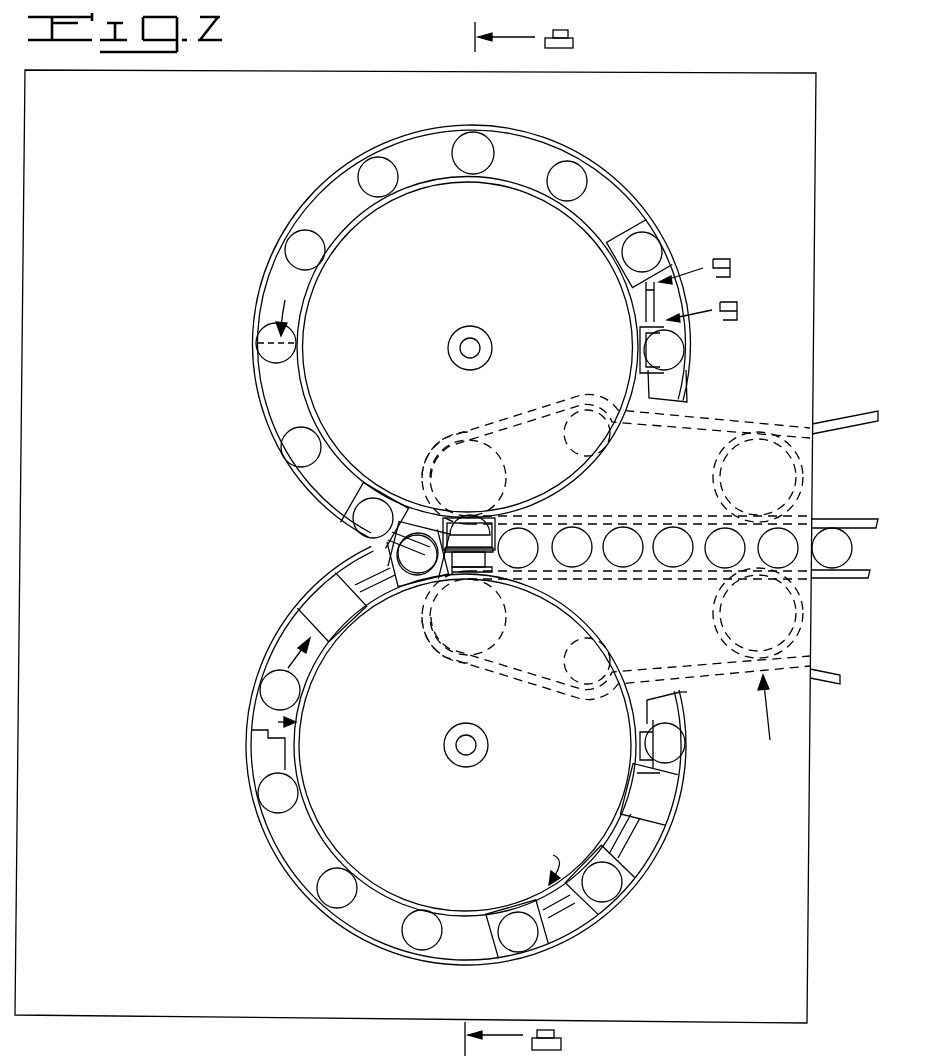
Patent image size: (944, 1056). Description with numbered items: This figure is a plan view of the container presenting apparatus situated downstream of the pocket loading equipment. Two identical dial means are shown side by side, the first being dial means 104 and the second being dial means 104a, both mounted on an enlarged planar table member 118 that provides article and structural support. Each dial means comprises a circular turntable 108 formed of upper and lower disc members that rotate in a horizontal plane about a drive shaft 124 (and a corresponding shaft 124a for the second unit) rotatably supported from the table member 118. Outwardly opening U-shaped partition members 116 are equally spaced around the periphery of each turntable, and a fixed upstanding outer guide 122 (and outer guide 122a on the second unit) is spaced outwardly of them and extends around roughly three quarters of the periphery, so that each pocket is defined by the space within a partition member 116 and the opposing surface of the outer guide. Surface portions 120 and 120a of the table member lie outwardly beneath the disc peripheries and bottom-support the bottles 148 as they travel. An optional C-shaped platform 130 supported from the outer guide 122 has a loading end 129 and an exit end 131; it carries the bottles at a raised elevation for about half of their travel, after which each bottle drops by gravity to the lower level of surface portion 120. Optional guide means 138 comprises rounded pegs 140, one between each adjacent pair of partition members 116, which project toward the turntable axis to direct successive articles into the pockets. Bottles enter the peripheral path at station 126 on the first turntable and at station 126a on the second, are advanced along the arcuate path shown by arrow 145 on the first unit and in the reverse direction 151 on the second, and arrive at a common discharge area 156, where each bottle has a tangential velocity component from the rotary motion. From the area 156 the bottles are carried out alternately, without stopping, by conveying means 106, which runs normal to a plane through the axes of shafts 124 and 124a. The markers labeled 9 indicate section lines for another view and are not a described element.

The second dial means 104a is at (190, 366).
The dial means 104 is at (158, 726).
The outer guide 122a is at (540, 128).
The outer guide 122 is at (552, 950).
The table surface portion 120a is at (328, 201).
The table surface portion 120 is at (300, 630).
The drive shaft 124a is at (478, 341).
The drive shaft 124 is at (460, 760).
The bottle entry station 126a is at (680, 353).
The bottle entry station 126 is at (670, 754).
The bottle 148 is at (298, 456).
The reverse direction arrow 151 is at (272, 288).
The arcuate path arrow 145 is at (290, 652).
The turntable 108 is at (280, 720).
The partition member 116 is at (336, 620).
The C-shaped platform 130 is at (449, 952).
The rounded peg 140 is at (546, 906).
The guide means 138 is at (535, 864).
The exit end of platform 131 is at (262, 734).
The loading end of platform 129 is at (685, 694).
The discharge area 156 is at (497, 553).
The conveying means 106 is at (616, 570).
The planar table member 118 is at (798, 950).
The section line indicator 9 is at (698, 290).